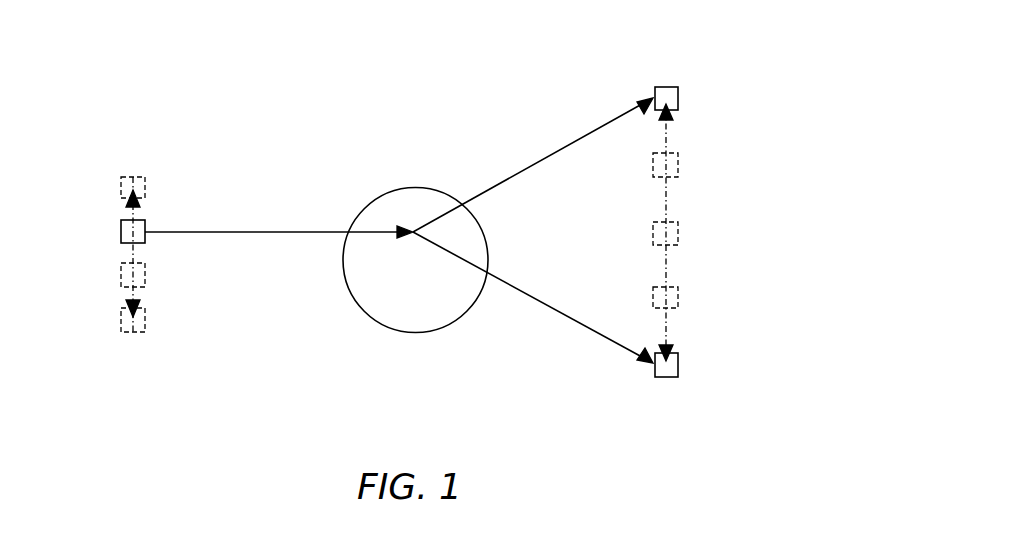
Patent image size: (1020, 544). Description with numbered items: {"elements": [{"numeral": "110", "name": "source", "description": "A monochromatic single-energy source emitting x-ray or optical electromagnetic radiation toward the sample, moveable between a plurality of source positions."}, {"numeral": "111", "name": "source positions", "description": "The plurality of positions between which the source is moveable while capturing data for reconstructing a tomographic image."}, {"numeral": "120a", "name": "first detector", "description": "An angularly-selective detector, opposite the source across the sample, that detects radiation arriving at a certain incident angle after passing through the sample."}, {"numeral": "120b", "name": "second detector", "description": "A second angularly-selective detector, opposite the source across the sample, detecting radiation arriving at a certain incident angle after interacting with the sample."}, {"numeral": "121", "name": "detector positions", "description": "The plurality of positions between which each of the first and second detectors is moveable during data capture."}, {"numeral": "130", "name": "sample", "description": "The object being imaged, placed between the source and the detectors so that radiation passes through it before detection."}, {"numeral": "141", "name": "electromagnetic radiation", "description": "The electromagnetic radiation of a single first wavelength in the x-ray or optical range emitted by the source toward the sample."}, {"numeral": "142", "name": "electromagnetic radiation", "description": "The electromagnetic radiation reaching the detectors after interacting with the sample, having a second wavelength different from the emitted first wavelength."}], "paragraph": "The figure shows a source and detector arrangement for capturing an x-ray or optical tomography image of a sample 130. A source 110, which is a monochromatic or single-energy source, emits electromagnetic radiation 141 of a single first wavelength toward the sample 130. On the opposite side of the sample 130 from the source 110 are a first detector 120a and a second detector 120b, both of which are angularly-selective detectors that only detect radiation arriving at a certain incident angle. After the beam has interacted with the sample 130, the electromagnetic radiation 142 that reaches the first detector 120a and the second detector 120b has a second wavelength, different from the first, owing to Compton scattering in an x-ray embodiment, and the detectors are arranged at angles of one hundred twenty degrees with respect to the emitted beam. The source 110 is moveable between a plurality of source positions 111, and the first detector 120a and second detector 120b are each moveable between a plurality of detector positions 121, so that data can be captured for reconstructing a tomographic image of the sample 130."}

The first mobile device 110 is at (121, 227).
The trajectory of first mobile device 111 is at (135, 175).
The second mobile device at first position 120a is at (670, 87).
The second mobile device at second position 120b is at (670, 377).
The trajectory of second mobile device 121 is at (680, 163).
The relay node 130 is at (485, 228).
The first communication link 141 is at (260, 227).
The second communication link 142 is at (540, 155).